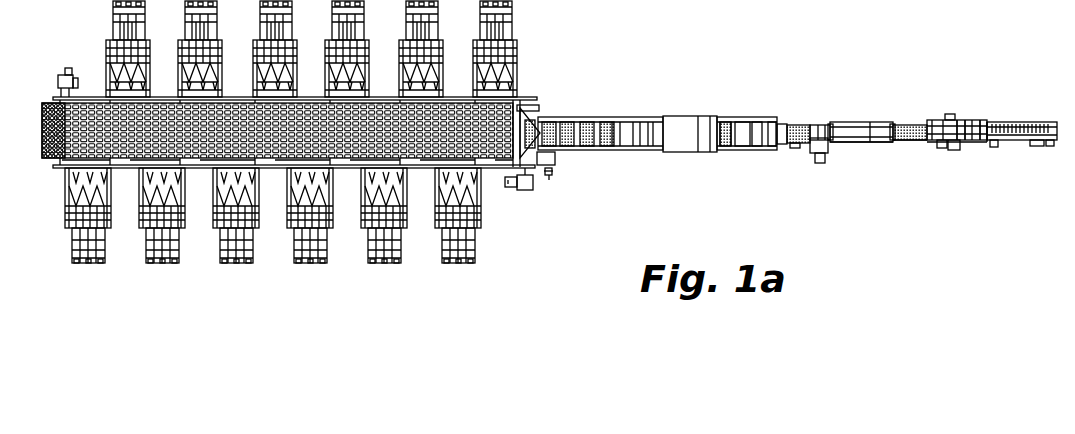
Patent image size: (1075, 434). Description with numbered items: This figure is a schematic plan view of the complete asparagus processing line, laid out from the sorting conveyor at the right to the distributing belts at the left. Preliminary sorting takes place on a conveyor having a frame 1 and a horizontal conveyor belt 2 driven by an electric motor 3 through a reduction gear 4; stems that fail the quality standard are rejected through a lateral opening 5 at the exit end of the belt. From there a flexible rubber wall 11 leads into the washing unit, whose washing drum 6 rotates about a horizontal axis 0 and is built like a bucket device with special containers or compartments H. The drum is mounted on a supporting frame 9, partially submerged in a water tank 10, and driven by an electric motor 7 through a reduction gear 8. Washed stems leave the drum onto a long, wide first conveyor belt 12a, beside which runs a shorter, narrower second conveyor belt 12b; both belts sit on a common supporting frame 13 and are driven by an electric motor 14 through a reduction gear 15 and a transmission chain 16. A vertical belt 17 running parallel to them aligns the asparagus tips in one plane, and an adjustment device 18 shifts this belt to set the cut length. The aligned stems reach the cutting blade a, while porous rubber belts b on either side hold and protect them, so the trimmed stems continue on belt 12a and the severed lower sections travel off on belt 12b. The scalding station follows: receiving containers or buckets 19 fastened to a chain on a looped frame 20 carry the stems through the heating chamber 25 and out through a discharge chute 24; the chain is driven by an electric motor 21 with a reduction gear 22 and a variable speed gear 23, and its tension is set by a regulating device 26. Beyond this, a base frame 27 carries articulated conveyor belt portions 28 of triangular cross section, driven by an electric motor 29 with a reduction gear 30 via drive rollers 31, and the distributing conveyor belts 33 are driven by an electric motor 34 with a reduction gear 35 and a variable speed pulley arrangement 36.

The frame 1 is at (1028, 122).
The horizontal conveyor belt 2 is at (1005, 122).
The electric motor 3 is at (1036, 146).
The reduction gear 4 is at (1050, 146).
The lateral opening 5 is at (996, 147).
The washing drum 6 is at (967, 120).
The electric motor 7 is at (942, 148).
The reduction gear 8 is at (955, 150).
The supporting frame 9 is at (982, 120).
The water tank 10 is at (930, 142).
The flexible rubber wall 11 is at (987, 142).
The first conveyor belt 12a is at (905, 140).
The second conveyor belt 12b is at (880, 142).
The common supporting frame 13 is at (876, 122).
The electric motor 14 is at (819, 163).
The reduction gear 15 is at (856, 143).
The transmission chain 16 is at (796, 148).
The vertical belt 17 is at (862, 122).
The adjustment device 18 is at (833, 124).
The receiving containers or buckets 19 is at (632, 148).
The looped frame 20 is at (722, 150).
The electric motor 21 is at (553, 170).
The reduction gear 22 is at (556, 158).
The variable speed gear 23 is at (552, 177).
The discharge chute 24 is at (540, 122).
The heating chamber 25 is at (703, 152).
The regulating device 26 is at (762, 150).
The base frame 27 is at (253, 88).
The articulated conveyor belt portions 28 is at (376, 103).
The electric motor 29 is at (509, 188).
The reduction gear 30 is at (527, 190).
The drive rollers 31 is at (536, 105).
The conveyor belts 33 is at (345, 170).
The electric motor 34 is at (78, 81).
The reduction gear 35 is at (60, 79).
The variable speed pulley arrangement 36 is at (68, 68).
The cutting blade a is at (816, 125).
The holding belts b is at (826, 125).
The horizontal axis 0 is at (949, 114).
The containers or compartments H is at (959, 120).